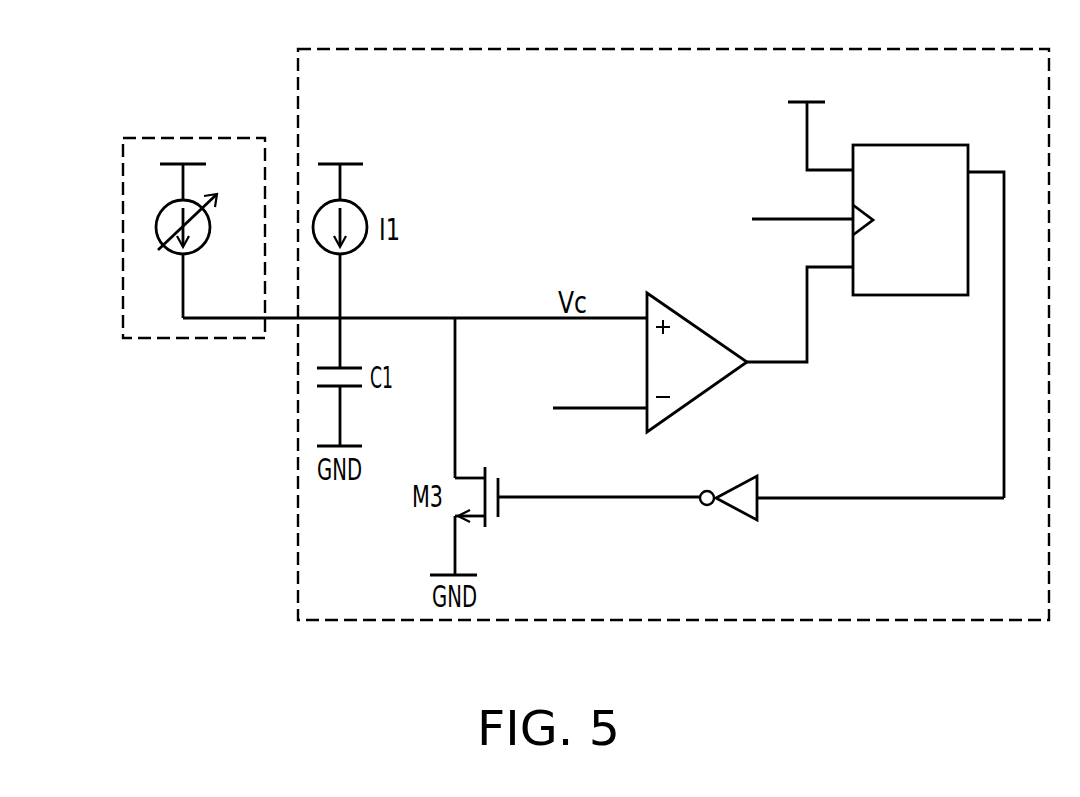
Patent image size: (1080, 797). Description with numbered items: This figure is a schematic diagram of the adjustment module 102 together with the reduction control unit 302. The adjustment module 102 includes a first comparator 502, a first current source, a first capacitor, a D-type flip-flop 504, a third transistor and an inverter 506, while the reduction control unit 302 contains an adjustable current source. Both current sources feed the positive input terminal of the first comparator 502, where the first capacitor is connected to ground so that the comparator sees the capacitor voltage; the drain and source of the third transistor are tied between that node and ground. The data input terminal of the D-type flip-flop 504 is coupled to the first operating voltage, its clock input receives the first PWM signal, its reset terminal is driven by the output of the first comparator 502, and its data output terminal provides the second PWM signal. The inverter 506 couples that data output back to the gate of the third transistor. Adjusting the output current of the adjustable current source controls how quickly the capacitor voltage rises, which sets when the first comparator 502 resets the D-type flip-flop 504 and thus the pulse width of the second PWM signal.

The adjustment module 102 is at (999, 49).
The reduction control unit 302 is at (193, 137).
The first comparator 502 is at (697, 323).
The D-type flip-flop 504 is at (912, 144).
The inverter 506 is at (733, 509).